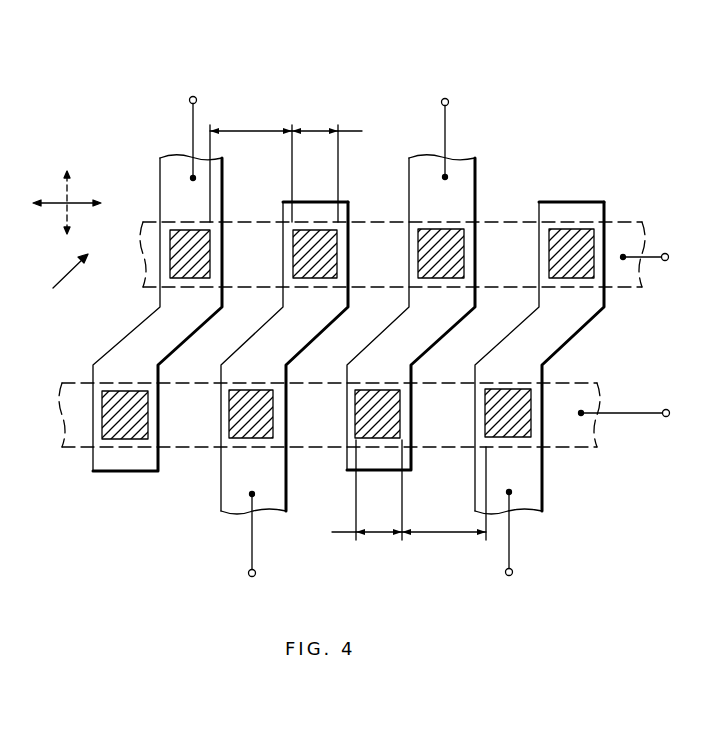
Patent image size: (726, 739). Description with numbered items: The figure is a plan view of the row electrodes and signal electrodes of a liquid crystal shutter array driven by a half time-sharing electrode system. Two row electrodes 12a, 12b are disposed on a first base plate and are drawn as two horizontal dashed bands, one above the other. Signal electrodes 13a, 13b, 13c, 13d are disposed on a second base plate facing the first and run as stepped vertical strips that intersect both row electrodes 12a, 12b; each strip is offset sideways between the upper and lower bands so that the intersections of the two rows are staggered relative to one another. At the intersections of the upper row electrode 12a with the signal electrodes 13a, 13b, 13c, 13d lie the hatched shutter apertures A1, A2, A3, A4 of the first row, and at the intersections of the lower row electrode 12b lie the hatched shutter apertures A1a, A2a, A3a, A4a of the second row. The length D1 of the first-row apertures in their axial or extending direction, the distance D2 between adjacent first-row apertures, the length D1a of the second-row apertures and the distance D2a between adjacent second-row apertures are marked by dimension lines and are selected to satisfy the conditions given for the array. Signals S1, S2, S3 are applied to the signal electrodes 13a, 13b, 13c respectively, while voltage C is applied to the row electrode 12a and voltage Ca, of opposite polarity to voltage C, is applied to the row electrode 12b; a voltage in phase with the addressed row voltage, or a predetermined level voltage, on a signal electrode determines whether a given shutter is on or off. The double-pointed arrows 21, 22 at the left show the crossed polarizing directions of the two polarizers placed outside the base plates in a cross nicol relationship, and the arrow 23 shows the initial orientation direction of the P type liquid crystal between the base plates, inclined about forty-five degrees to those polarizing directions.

The double-pointed arrow 21 is at (78, 203).
The double-pointed arrow 22 is at (69, 191).
The arrow 23 is at (70, 284).
The first row electrode 12a is at (507, 220).
The second row electrode 12b is at (595, 383).
The signal electrode 13a is at (535, 499).
The signal electrode 13b is at (468, 170).
The signal electrode 13c is at (272, 505).
The signal electrode 13d is at (222, 174).
The shutter aperture A1 is at (590, 232).
The shutter aperture A2 is at (421, 239).
The shutter aperture A3 is at (293, 239).
The shutter aperture A4 is at (171, 239).
The shutter aperture A1a is at (487, 402).
The shutter aperture A2a is at (359, 401).
The shutter aperture A3a is at (234, 402).
The shutter aperture A4a is at (103, 402).
The signal S1 is at (523, 540).
The signal S2 is at (460, 136).
The signal S3 is at (266, 541).
The voltage C is at (653, 258).
The voltage Ca is at (638, 414).
The length of first-row shutter aperture D1 is at (327, 164).
The distance between adjacent first-row shutter apertures D2 is at (251, 164).
The length of second-row shutter aperture D1a is at (367, 490).
The distance between adjacent second-row shutter apertures D2a is at (444, 493).